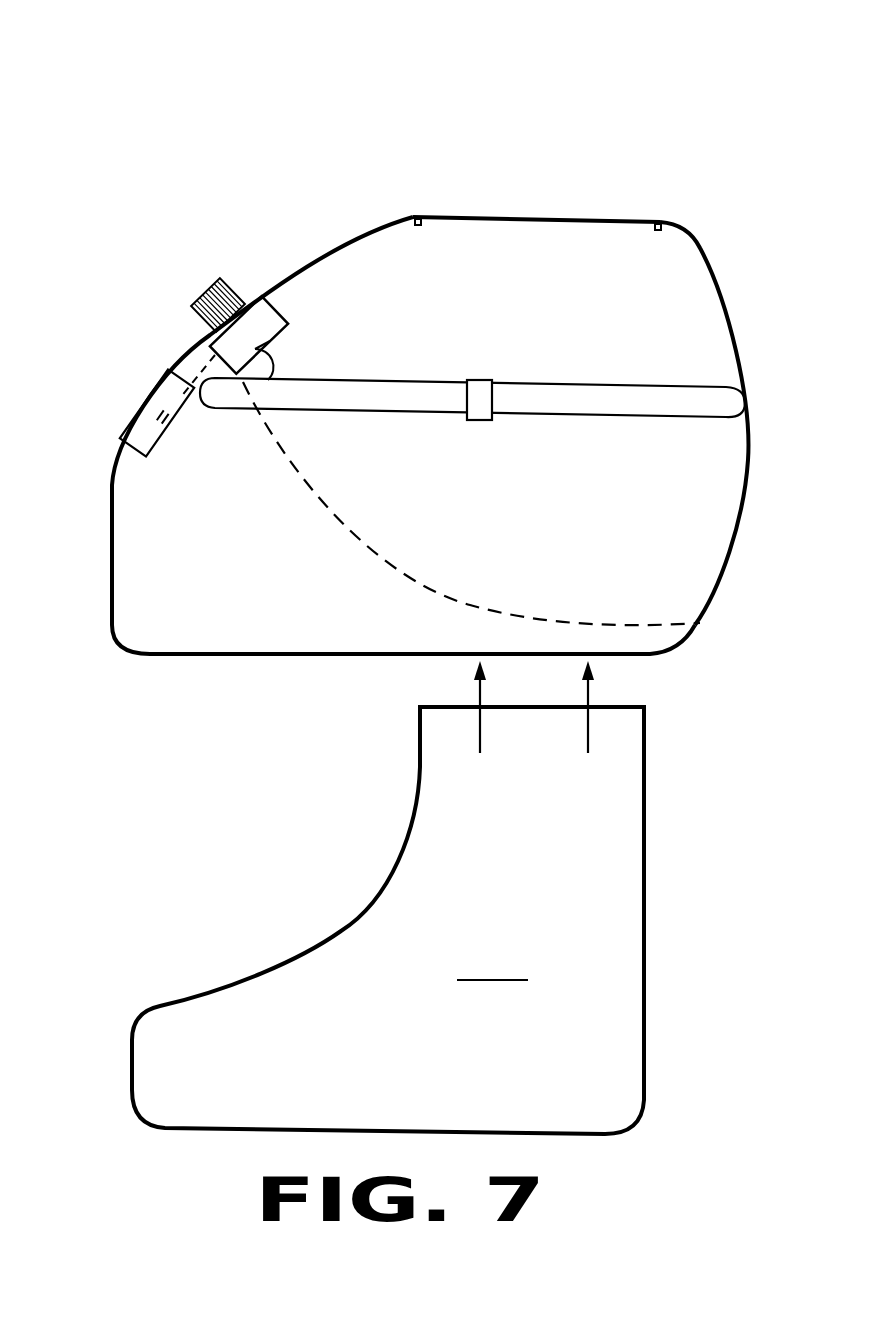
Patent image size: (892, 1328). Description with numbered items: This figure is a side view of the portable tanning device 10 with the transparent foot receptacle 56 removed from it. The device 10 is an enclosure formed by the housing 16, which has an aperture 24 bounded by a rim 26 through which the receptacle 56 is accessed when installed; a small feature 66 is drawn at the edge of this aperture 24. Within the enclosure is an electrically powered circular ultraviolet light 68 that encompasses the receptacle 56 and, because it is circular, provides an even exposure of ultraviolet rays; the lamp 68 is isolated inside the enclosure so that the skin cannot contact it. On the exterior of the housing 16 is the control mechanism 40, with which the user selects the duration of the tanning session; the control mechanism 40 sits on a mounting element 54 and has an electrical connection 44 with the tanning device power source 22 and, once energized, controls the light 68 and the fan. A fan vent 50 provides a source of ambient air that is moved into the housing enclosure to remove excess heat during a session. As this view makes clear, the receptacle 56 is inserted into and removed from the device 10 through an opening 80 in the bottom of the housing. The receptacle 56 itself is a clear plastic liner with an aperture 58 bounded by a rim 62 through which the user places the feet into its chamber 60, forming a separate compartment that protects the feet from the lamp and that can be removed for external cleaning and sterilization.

The portable tanning device 10 is at (294, 140).
The housing 16 is at (273, 257).
The aperture 24 is at (528, 218).
The rim 26 is at (663, 222).
The rim 62 is at (567, 221).
The opening 66 is at (425, 215).
The control mechanism 40 is at (160, 300).
The bracket 54 is at (185, 360).
The fan vent 50 is at (142, 412).
The ultraviolet light 68 is at (365, 418).
The electrical connection 44 is at (467, 590).
The opening 80 is at (150, 650).
The power source 22 is at (698, 625).
The transparent receptacle 56 is at (298, 937).
The aperture 58 is at (520, 707).
The chamber 60 is at (492, 961).